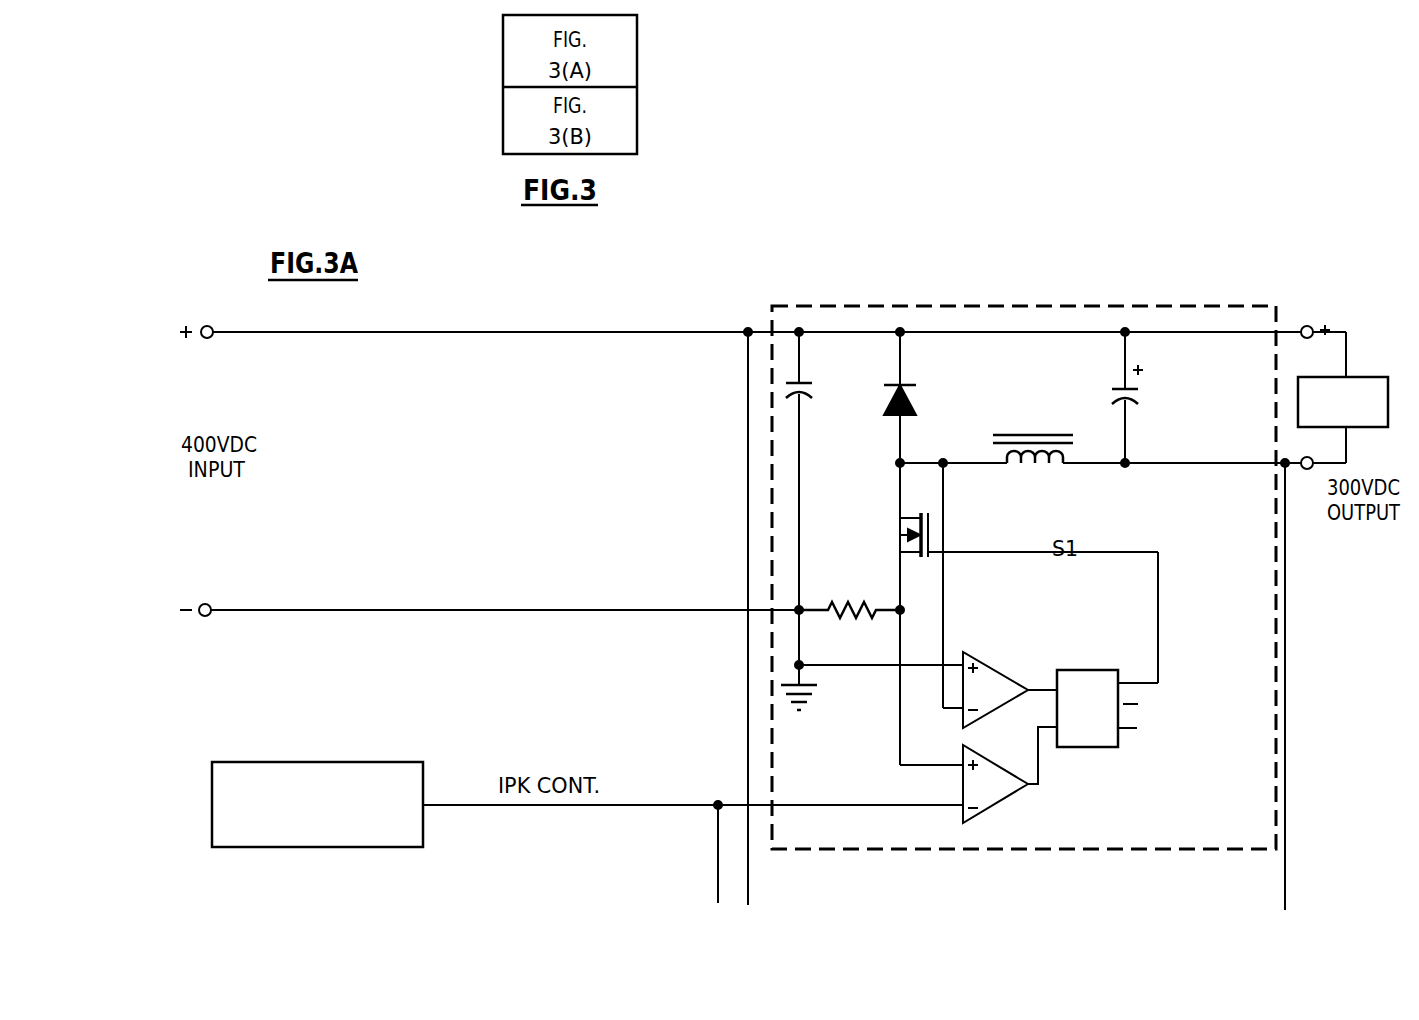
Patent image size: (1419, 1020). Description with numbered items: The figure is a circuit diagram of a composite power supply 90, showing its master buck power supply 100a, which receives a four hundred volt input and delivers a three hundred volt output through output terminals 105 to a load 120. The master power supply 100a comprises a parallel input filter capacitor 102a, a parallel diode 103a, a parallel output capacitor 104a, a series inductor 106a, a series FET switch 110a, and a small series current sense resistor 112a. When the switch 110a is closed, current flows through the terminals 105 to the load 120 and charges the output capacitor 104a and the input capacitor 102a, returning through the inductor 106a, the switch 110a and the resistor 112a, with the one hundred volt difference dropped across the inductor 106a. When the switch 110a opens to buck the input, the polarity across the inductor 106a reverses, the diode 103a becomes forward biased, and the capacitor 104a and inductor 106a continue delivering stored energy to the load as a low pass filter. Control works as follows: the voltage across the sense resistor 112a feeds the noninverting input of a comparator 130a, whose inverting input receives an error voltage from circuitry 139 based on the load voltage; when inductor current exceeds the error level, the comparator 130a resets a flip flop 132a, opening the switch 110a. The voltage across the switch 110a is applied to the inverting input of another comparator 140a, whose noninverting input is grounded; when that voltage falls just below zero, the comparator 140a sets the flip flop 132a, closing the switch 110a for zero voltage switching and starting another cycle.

The composite power supply 90 is at (979, 271).
The master buck power supply 100a is at (1277, 676).
The input filter capacitor 102a is at (806, 383).
The diode 103a is at (914, 385).
The output capacitor 104a is at (1118, 388).
The output terminals 105 is at (1304, 325).
The inductor 106a is at (1050, 463).
The FET switch 110a is at (913, 556).
The current sense resistor 112a is at (872, 602).
The load 120 is at (1352, 377).
The comparator 130a is at (988, 810).
The flip flop 132a is at (1093, 747).
The error voltage circuitry 139 is at (345, 762).
The comparator 140a is at (978, 655).